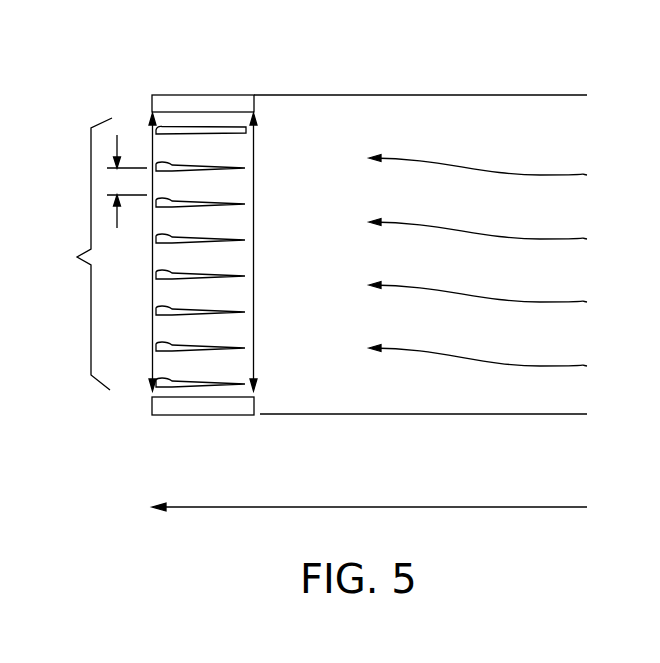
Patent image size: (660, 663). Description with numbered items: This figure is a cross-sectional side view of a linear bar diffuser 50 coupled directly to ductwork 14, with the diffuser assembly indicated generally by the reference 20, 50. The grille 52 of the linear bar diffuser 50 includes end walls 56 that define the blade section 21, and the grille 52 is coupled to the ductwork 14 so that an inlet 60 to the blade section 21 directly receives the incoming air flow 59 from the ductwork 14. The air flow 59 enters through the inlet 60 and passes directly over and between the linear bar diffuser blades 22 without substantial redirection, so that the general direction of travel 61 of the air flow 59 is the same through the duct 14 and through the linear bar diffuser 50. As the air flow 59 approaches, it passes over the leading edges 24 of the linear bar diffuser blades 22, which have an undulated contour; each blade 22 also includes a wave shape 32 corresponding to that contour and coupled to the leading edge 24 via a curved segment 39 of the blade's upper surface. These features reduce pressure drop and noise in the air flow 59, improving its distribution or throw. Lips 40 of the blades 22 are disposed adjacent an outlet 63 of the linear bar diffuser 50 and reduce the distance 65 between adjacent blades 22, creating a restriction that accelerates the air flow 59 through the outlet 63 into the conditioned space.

The ductwork 14 is at (422, 95).
The heat exchanger 20 is at (238, 58).
The linear bar diffuser 50 is at (194, 250).
The blade section 21 is at (81, 254).
The linear bar diffuser blade 22 is at (238, 145).
The leading edge 24 is at (250, 126).
The wave shape 32 is at (228, 127).
The curved segment 39 is at (236, 124).
The lip 40 is at (153, 118).
The grille 52 is at (180, 428).
The end wall 56 is at (180, 98).
The air flow 59 is at (485, 166).
The inlet 60 is at (254, 262).
The direction of travel 61 is at (375, 508).
The outlet 63 is at (152, 318).
The distance 65 is at (118, 222).